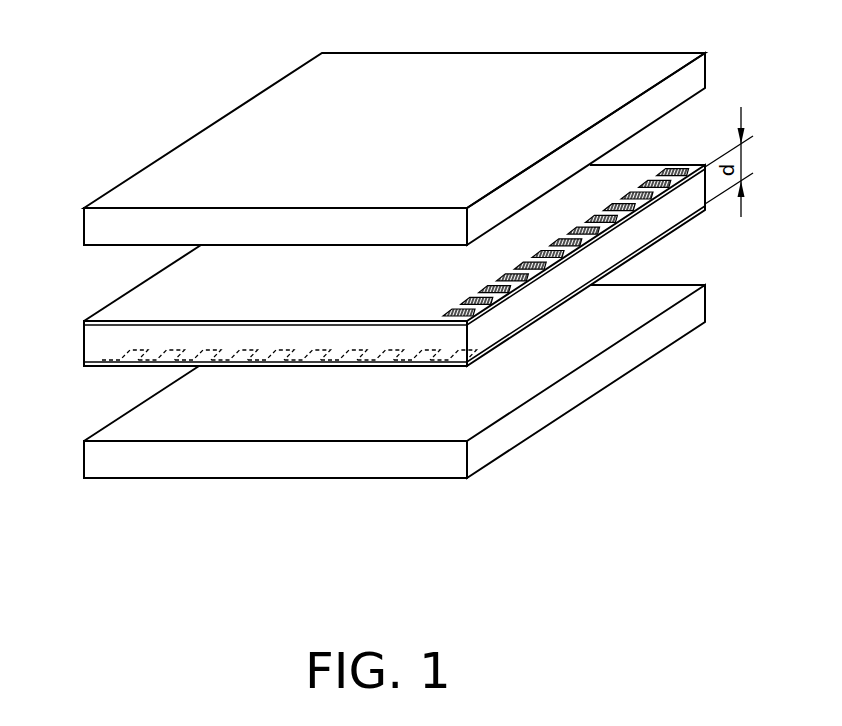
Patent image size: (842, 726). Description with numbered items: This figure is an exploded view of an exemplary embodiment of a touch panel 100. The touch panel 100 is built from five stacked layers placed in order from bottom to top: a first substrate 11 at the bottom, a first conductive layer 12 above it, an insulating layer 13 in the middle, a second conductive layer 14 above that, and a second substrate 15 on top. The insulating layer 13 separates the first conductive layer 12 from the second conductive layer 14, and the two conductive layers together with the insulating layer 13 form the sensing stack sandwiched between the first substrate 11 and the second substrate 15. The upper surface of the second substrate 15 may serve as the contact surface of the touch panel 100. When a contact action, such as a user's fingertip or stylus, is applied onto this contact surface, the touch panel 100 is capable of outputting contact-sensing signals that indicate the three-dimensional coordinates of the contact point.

The touch panel 100 is at (127, 92).
The first substrate 11 is at (97, 462).
The first conductive layer 12 is at (92, 360).
The insulating layer 13 is at (92, 337).
The second conductive layer 14 is at (110, 323).
The second substrate 15 is at (102, 229).